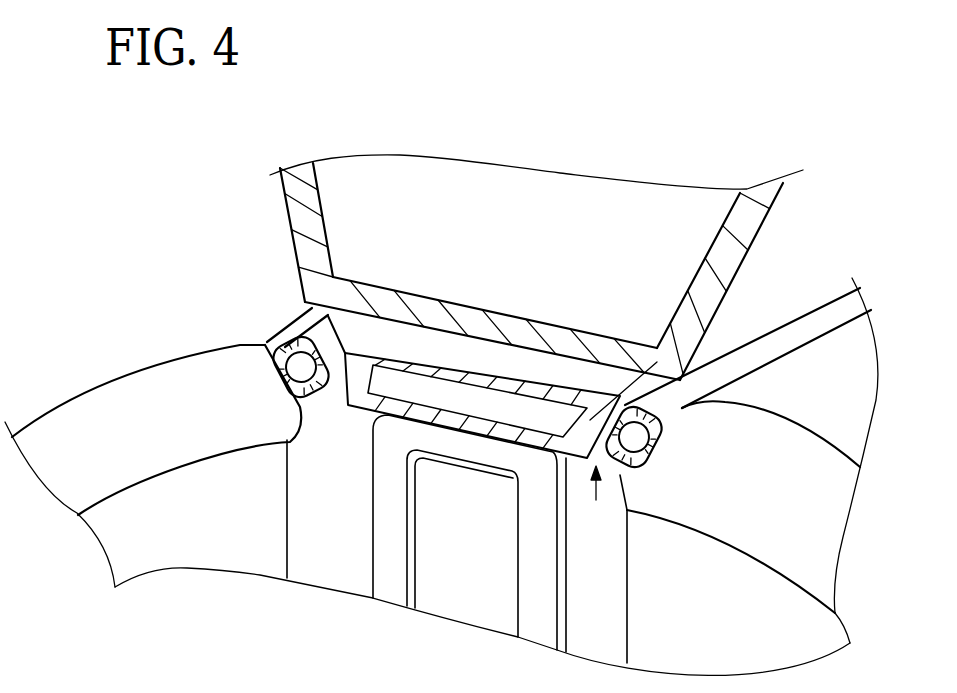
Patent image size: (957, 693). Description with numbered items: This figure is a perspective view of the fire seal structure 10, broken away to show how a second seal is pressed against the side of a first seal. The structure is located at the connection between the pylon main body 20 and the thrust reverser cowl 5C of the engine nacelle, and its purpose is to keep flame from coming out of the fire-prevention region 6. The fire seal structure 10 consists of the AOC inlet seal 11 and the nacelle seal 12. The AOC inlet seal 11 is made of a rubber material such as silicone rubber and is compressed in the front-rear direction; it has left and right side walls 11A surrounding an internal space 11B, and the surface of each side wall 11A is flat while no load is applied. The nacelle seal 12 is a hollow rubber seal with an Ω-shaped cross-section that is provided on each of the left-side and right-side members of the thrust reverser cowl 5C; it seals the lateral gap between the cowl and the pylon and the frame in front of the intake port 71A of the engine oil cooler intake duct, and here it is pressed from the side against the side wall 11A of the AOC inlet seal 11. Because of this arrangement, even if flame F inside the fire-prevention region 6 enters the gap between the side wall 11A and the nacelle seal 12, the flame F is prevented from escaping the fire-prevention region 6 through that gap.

The thrust reverser cowl 5C is at (95, 403).
The fire-prevention region 6 is at (608, 579).
The intake port 71A is at (518, 608).
The fire seal structure 10 is at (303, 331).
The AOC inlet seal 11 is at (503, 352).
The side wall 11A is at (657, 362).
The internal space 11B is at (410, 386).
The nacelle seal 12 is at (265, 342).
The pylon main body 20 is at (773, 218).
The flame F is at (595, 501).